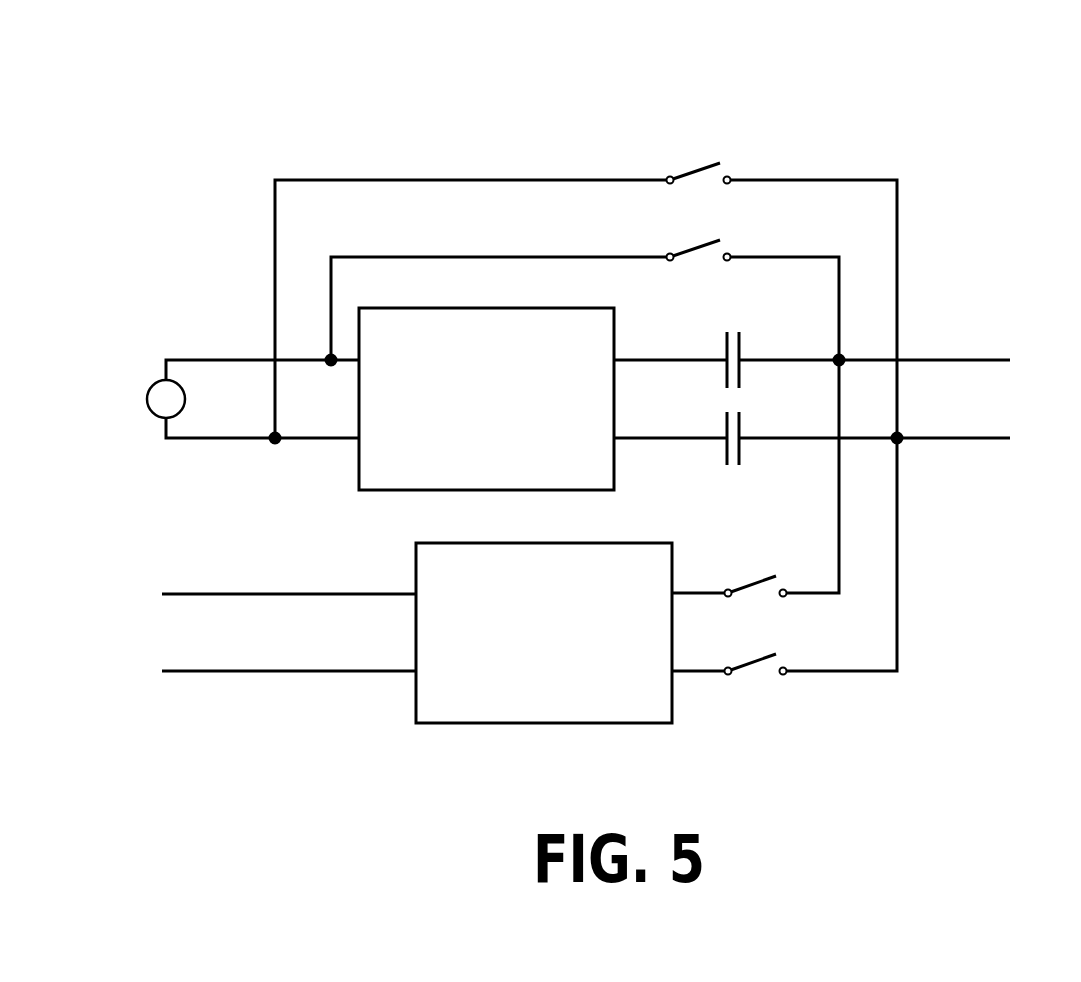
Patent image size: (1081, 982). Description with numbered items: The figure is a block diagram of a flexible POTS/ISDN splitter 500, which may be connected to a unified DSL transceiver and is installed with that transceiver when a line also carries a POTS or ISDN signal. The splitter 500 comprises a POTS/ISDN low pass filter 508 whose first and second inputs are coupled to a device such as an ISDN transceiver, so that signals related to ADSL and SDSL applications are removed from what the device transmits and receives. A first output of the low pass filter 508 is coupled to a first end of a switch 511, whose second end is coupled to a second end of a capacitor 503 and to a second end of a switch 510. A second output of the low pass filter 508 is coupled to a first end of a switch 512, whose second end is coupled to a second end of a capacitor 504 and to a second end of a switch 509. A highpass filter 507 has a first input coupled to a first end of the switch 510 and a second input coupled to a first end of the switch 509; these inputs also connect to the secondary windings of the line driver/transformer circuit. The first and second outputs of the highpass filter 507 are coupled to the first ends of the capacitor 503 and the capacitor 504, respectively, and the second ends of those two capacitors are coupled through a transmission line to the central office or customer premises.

The flexible POTS/ISDN splitter 500 is at (612, 90).
The capacitor 503 is at (734, 320).
The capacitor 504 is at (731, 485).
The highpass filter 507 is at (563, 475).
The POTS/ISDN low pass filter 508 is at (615, 707).
The switch 509 is at (703, 146).
The switch 510 is at (717, 290).
The switch 511 is at (770, 606).
The switch 512 is at (766, 692).